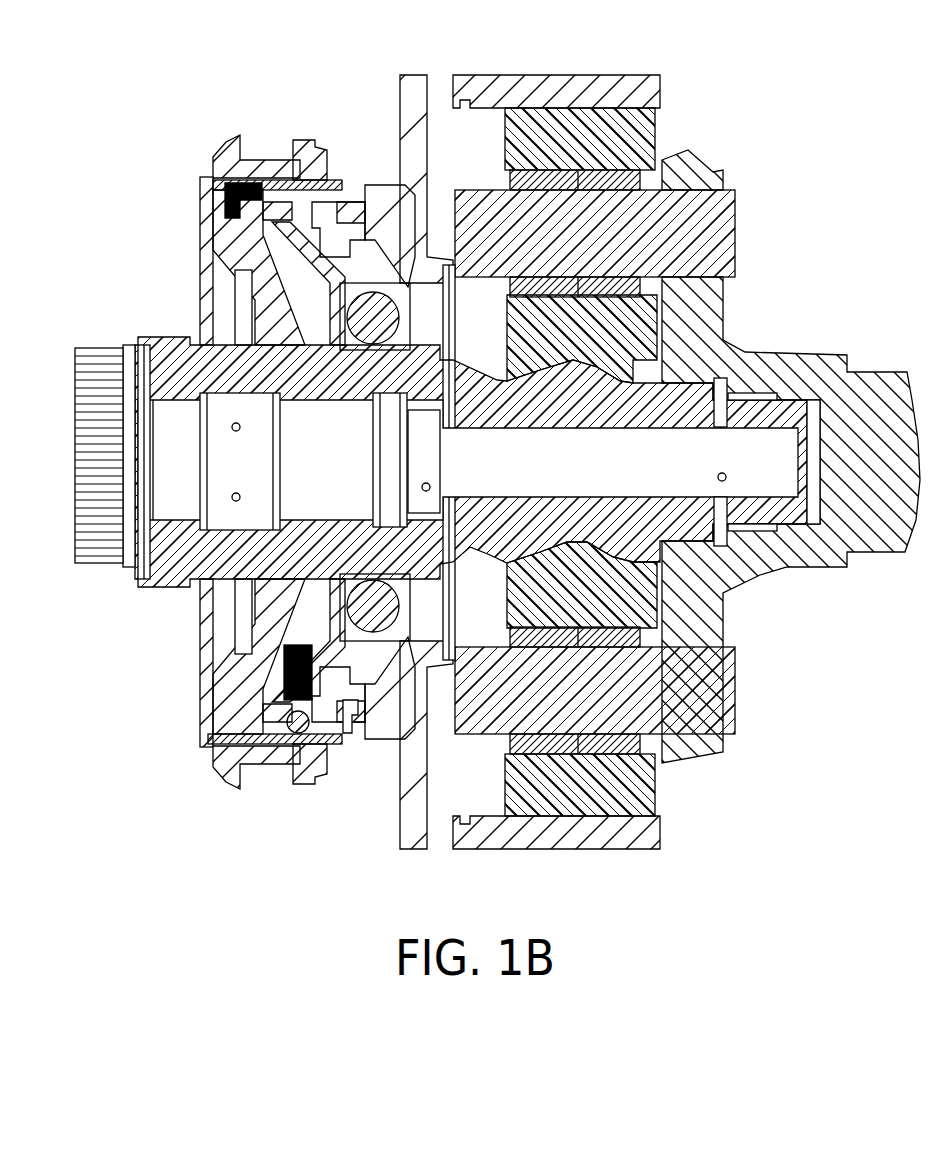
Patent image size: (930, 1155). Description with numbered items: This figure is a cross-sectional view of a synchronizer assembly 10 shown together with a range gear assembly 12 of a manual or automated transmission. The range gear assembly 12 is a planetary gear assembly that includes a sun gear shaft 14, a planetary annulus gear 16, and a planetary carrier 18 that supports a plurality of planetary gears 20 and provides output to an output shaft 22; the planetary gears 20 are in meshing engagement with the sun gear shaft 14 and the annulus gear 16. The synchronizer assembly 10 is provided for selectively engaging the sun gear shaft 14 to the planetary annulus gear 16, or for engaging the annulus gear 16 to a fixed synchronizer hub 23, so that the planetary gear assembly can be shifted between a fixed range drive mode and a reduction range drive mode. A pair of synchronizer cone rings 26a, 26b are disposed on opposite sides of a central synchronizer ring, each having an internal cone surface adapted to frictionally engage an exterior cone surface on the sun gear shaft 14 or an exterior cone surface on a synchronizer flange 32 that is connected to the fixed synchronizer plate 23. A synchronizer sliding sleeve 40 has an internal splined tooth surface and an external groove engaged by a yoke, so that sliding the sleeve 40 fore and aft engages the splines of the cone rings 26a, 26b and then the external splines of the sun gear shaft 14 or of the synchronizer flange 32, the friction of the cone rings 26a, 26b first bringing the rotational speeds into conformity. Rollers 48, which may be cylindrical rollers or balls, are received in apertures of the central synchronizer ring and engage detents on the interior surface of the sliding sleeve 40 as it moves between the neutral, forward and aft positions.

The synchronizer assembly 10 is at (265, 838).
The range gear assembly 12 is at (754, 148).
The sun gear shaft 14 is at (76, 560).
The planetary annulus gear 16 is at (547, 68).
The planetary carrier 18 is at (722, 692).
The planetary gears 20 is at (643, 138).
The output shaft 22 is at (775, 565).
The fixed synchronizer hub 23 is at (402, 73).
The synchronizer cone ring 26a is at (213, 736).
The synchronizer cone ring 26b is at (350, 738).
The synchronizer flange 32 is at (374, 163).
The synchronizer sliding sleeve 40 is at (220, 129).
The roller 48 is at (294, 733).